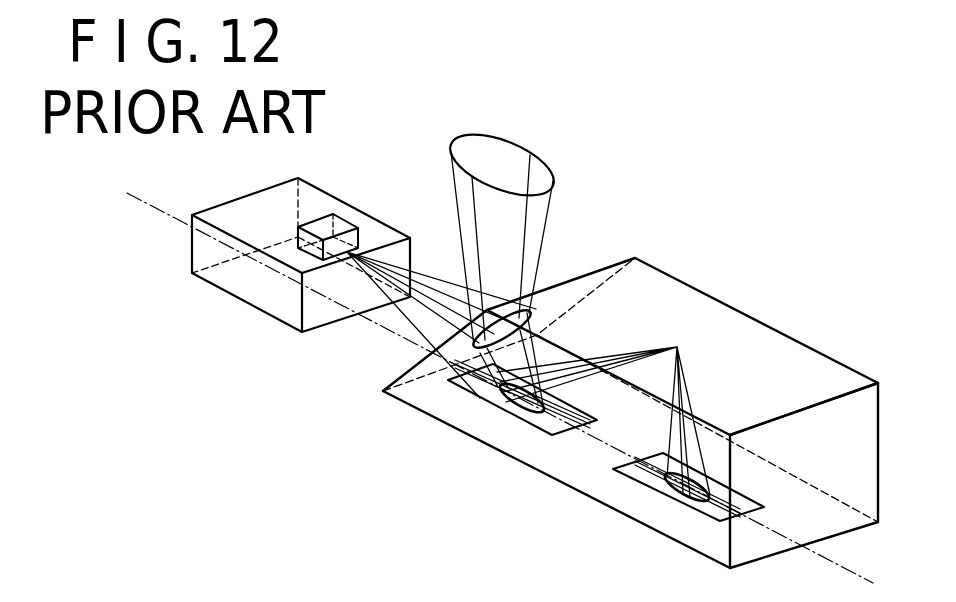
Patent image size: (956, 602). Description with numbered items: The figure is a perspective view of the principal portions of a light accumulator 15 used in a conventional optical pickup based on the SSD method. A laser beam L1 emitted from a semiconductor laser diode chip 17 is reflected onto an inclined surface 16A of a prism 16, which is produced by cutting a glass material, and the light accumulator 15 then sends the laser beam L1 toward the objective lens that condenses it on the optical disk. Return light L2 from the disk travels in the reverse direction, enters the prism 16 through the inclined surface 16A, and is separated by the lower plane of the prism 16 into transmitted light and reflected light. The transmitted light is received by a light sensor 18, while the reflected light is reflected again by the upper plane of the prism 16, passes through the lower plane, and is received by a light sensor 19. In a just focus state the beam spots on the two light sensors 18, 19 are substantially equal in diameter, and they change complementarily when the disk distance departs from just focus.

The light accumulator 15 is at (672, 212).
The prism 16 is at (783, 338).
The inclined surface 16A is at (572, 278).
The semiconductor laser diode chip 17 is at (342, 223).
The light sensor 18 is at (543, 431).
The light sensor 19 is at (705, 519).
The laser beam L1 is at (542, 217).
The return light L2 is at (623, 357).